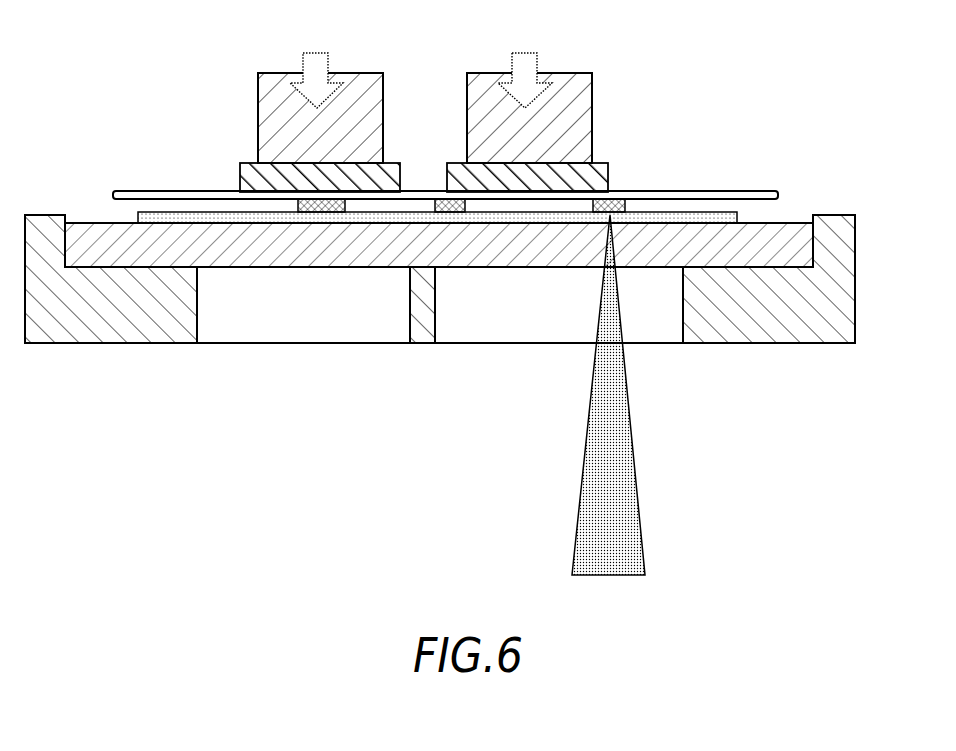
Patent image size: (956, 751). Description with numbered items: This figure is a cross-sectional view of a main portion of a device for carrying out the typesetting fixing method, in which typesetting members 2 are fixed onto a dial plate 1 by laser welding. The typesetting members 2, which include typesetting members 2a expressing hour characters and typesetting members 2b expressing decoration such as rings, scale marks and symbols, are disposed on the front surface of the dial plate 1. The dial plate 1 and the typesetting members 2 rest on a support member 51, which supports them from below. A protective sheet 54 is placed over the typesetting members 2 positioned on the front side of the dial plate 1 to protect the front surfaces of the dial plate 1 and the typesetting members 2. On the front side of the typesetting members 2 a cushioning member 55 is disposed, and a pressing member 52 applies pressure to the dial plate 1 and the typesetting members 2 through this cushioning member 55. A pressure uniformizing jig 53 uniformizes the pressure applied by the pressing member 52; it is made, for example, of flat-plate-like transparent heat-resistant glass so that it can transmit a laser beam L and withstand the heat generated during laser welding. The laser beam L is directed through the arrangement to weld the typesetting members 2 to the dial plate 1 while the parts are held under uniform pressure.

The dial plate 1 is at (712, 225).
The typesetting members 2 is at (437, 316).
The typesetting members 2a is at (317, 212).
The typesetting members 2b is at (608, 217).
The support member 51 is at (792, 330).
The pressing member 52 is at (362, 87).
The pressure uniformizing jig 53 is at (80, 220).
The protective sheet 54 is at (754, 191).
The cushioning member 55 is at (395, 160).
The laser beam L is at (570, 508).